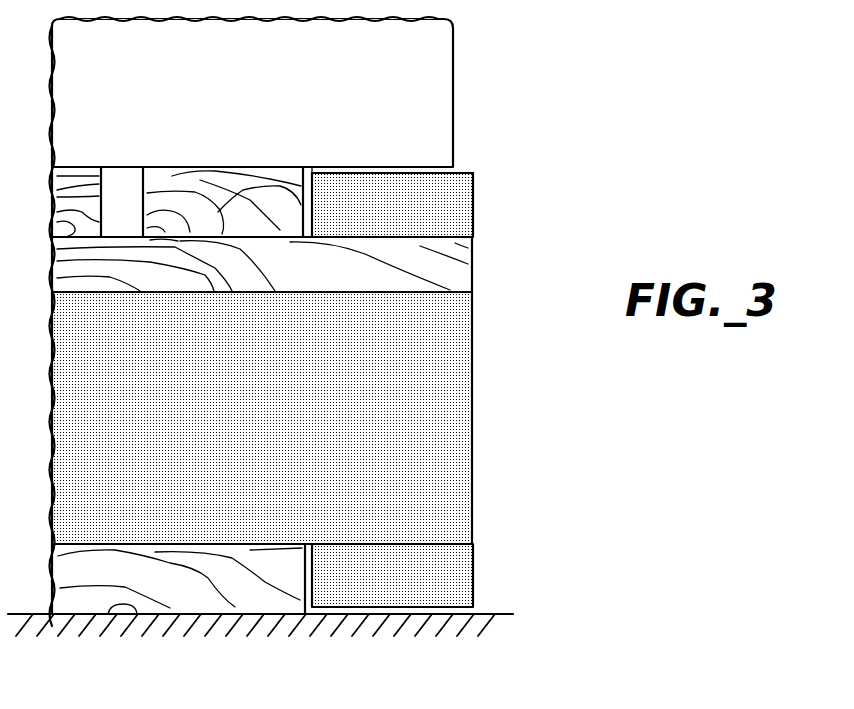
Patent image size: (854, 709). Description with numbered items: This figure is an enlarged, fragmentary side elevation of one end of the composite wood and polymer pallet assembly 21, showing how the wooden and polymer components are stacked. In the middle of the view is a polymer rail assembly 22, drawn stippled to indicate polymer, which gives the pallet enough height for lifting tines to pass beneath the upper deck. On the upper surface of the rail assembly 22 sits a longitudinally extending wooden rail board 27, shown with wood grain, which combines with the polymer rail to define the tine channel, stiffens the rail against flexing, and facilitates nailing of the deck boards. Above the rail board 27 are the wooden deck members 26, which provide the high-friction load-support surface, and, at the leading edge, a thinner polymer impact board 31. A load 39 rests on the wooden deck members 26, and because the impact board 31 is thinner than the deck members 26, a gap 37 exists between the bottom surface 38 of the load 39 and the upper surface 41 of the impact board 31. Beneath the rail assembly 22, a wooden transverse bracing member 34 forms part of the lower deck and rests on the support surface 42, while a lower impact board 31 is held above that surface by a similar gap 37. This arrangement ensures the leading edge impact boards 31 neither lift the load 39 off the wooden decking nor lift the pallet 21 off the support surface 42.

The pallet assembly 21 is at (578, 213).
The rail assembly 22 is at (458, 416).
The wooden deck members 26 is at (88, 163).
The wooden rail boards 27 is at (459, 275).
The polymer impact boards 31 is at (458, 214).
The transverse bracing members 34 is at (213, 605).
The gap 37 is at (455, 170).
The bottom surface of load 38 is at (335, 170).
The load 39 is at (438, 88).
The upper surface of polymer impact board 41 is at (368, 172).
The support surface 42 is at (137, 614).